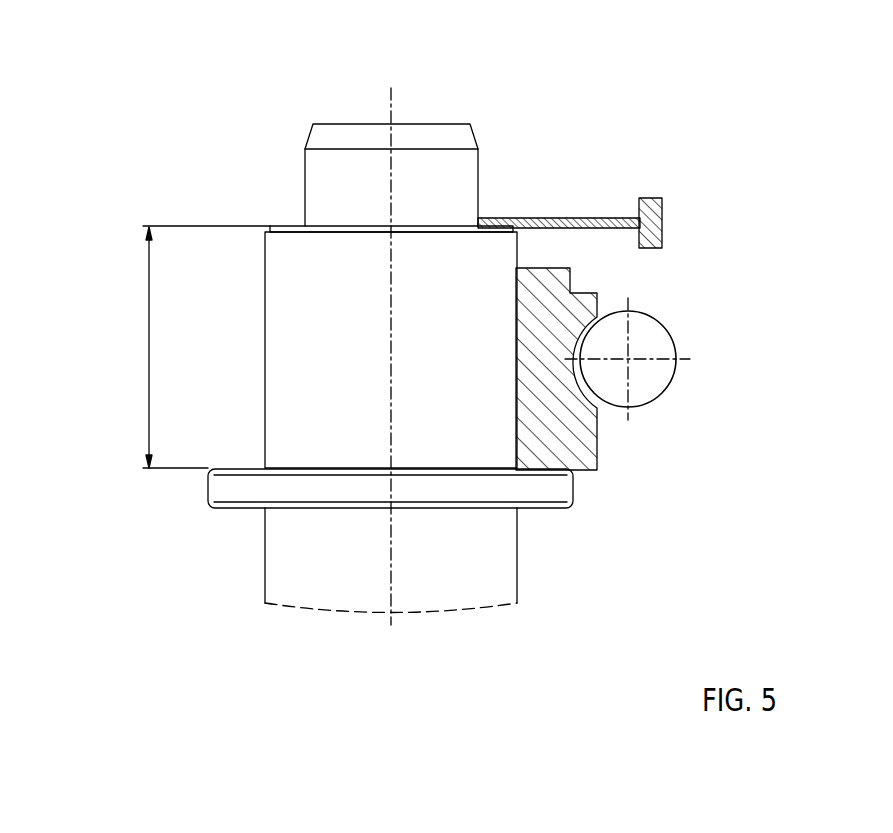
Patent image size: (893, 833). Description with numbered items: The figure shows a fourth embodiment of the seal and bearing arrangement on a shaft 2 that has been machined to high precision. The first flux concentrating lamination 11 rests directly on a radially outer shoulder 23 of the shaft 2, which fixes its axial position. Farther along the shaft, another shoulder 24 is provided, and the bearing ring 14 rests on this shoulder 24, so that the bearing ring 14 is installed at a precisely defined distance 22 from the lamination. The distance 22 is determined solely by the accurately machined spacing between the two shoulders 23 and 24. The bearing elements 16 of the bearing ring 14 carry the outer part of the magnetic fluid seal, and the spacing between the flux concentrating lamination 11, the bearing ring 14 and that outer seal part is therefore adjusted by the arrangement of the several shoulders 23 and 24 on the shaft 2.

The shaft 2 is at (410, 178).
The radially outer shoulder 23 is at (290, 224).
The distance 22 is at (148, 326).
The first flux concentrating lamination 11 is at (595, 218).
The bearing ring 14 is at (573, 420).
The bearing elements 16 is at (647, 343).
The shoulder 24 is at (578, 493).